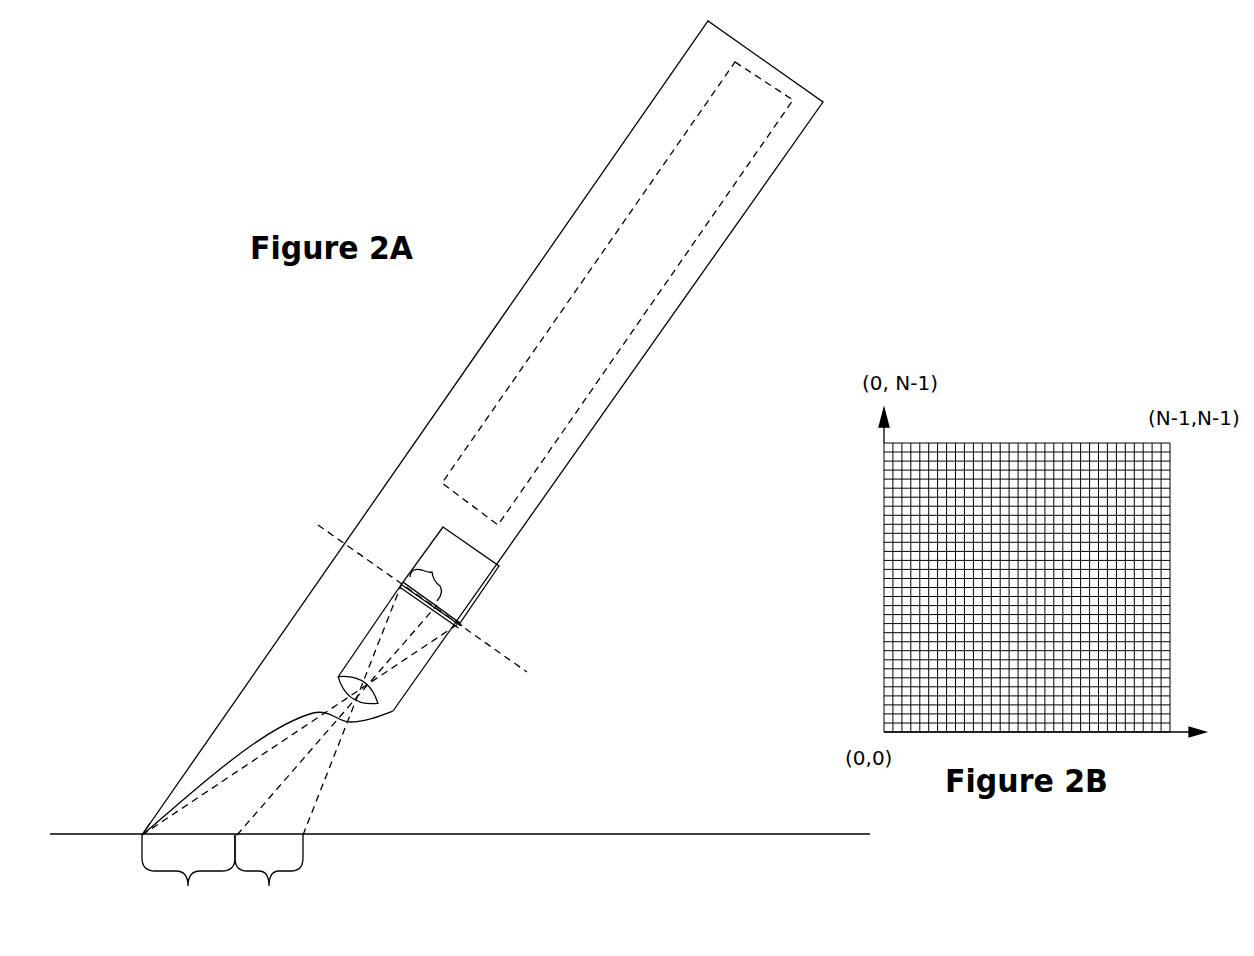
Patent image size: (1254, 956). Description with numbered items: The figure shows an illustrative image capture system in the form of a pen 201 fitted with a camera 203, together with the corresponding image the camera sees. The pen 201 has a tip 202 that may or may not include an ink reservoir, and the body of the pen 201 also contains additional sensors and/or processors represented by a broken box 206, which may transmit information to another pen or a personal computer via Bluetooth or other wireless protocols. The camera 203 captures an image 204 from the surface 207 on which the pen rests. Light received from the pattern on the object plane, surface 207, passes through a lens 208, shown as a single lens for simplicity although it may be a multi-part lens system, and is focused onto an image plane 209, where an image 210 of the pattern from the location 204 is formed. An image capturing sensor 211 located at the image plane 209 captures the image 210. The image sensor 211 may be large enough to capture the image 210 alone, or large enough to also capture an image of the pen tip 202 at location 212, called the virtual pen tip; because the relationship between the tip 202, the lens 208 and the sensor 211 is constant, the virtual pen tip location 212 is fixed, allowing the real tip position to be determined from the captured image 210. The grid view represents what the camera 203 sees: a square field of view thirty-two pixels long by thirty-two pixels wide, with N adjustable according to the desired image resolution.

The pen 201 is at (310, 632).
The tip 202 is at (142, 832).
The camera 203 is at (450, 553).
The image 204 is at (222, 876).
The broken box 206 is at (616, 293).
The surface 207 is at (502, 833).
The lens 208 is at (377, 705).
The image plane 209 is at (524, 672).
The image 210 is at (430, 573).
The image capturing sensor 211 is at (440, 603).
The virtual pen tip 212 is at (462, 625).